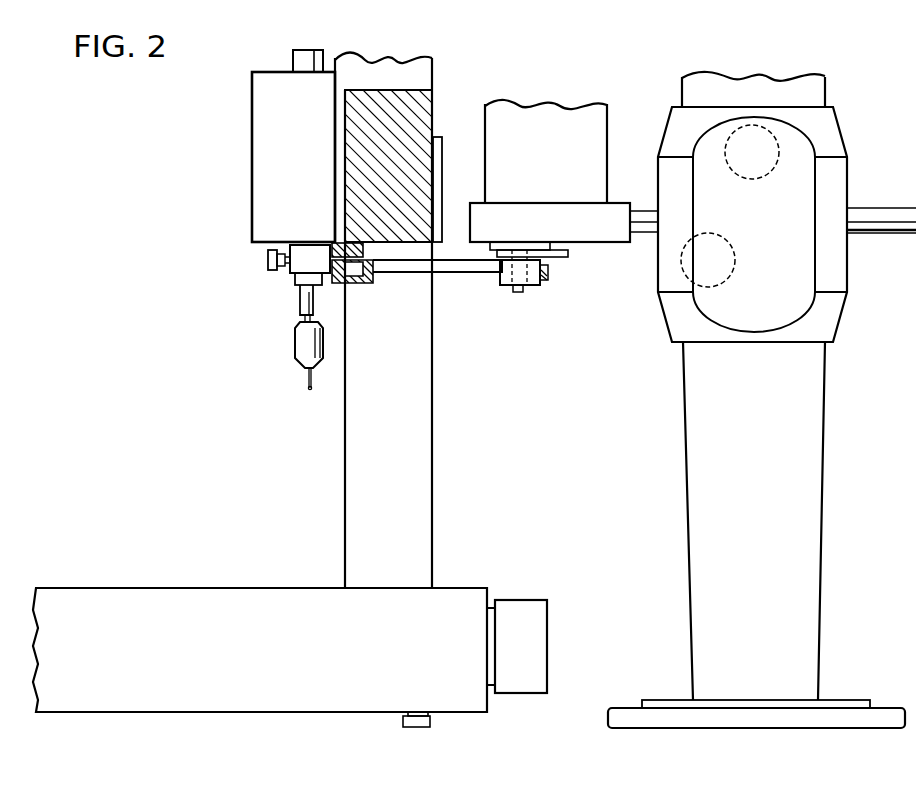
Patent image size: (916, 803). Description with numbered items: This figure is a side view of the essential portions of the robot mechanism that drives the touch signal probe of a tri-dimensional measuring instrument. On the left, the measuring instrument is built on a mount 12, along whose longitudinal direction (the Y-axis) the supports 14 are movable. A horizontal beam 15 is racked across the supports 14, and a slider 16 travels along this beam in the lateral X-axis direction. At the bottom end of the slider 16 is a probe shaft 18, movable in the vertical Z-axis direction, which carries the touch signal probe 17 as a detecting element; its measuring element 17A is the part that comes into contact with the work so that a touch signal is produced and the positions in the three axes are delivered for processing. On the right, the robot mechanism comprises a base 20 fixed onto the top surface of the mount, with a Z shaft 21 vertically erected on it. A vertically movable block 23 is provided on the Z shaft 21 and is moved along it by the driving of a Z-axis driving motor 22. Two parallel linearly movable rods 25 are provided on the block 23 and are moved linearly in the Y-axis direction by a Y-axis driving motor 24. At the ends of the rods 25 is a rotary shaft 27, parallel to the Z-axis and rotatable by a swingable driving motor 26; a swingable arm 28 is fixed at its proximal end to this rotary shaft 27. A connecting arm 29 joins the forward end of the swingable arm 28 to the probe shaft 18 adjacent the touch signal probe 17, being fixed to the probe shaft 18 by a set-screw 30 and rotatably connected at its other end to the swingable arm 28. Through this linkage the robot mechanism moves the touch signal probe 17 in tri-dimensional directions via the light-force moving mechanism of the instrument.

The mount 12 is at (125, 588).
The support 14 is at (347, 497).
The horizontal beam 15 is at (433, 103).
The slider 16 is at (252, 118).
The touch signal probe 17 is at (295, 343).
The measuring element 17A is at (308, 389).
The probe shaft 18 is at (292, 56).
The base 20 is at (882, 717).
The Z shaft 21 is at (825, 496).
The Z-axis driving motor 22 is at (780, 160).
The vertically movable block 23 is at (833, 126).
The Y-axis driving motor 24 is at (681, 262).
The linearly movable rod 25 is at (886, 235).
The swingable driving motor 26 is at (607, 126).
The rotary shaft 27 is at (519, 292).
The swingable arm 28 is at (466, 273).
The connecting arm 29 is at (300, 262).
The set-screw 30 is at (268, 260).